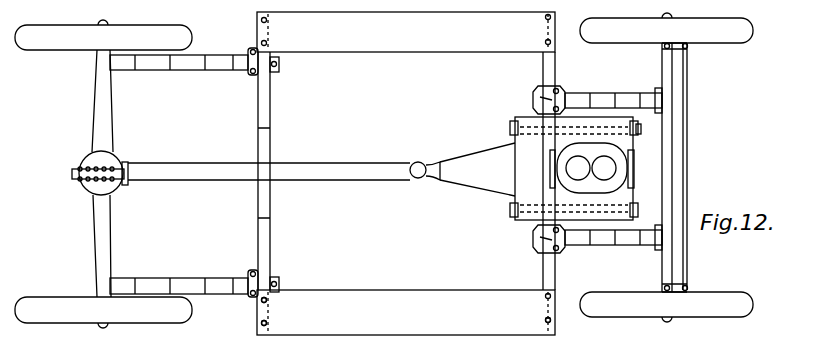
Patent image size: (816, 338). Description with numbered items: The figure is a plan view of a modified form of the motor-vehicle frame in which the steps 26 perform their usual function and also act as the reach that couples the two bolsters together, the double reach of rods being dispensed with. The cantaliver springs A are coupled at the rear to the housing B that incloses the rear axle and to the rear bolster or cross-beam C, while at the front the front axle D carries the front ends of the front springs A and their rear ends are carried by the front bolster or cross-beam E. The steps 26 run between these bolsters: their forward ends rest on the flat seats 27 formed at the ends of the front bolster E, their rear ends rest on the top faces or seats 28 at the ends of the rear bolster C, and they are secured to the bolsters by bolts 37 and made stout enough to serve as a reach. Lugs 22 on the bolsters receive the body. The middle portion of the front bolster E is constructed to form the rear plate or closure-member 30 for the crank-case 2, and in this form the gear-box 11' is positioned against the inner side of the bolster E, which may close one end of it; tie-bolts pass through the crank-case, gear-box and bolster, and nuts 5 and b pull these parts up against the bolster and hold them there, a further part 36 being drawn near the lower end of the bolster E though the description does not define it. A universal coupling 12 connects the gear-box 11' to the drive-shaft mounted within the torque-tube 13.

The cantaliver springs A is at (215, 65).
The housing B is at (93, 213).
The rear bolster or cross-beam C is at (258, 238).
The front axle D is at (685, 192).
The front bolster or cross-beam E is at (543, 263).
The crank-case 2 is at (616, 216).
The nuts 5 is at (641, 129).
The gear-box 11' is at (549, 168).
The universal coupling 12 is at (416, 179).
The torque-tube 13 is at (212, 172).
The lugs 22 is at (533, 92).
The steps 26 is at (406, 173).
The seat 27 is at (556, 326).
The top face or seat 28 is at (258, 310).
The rear plate or closure-member 30 is at (550, 161).
The bracket 36 is at (518, 215).
The bolts 37 is at (270, 302).
The nuts b is at (470, 169).